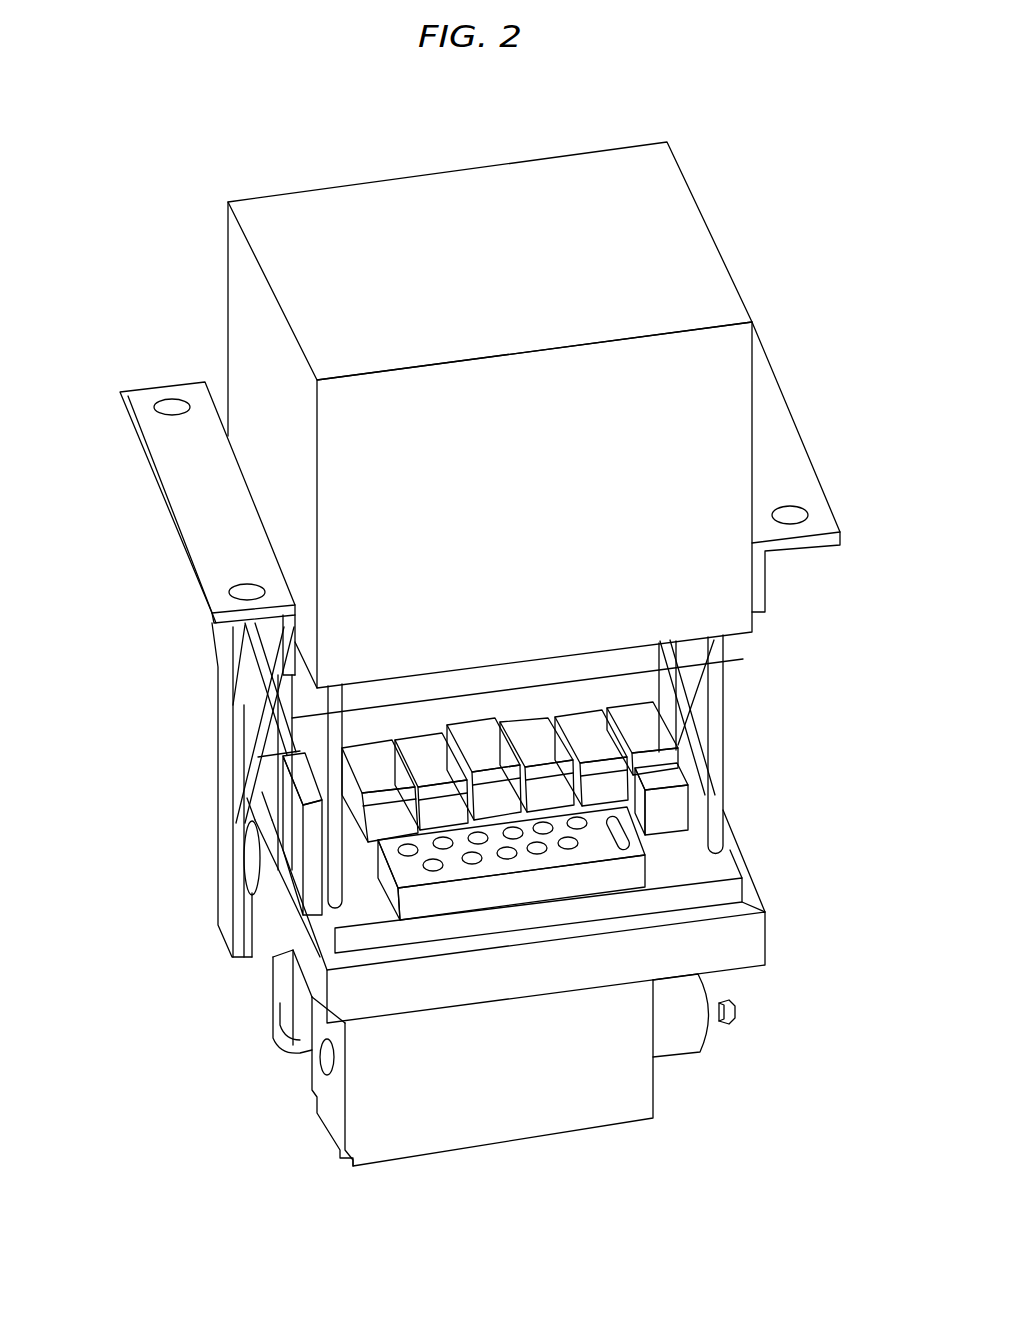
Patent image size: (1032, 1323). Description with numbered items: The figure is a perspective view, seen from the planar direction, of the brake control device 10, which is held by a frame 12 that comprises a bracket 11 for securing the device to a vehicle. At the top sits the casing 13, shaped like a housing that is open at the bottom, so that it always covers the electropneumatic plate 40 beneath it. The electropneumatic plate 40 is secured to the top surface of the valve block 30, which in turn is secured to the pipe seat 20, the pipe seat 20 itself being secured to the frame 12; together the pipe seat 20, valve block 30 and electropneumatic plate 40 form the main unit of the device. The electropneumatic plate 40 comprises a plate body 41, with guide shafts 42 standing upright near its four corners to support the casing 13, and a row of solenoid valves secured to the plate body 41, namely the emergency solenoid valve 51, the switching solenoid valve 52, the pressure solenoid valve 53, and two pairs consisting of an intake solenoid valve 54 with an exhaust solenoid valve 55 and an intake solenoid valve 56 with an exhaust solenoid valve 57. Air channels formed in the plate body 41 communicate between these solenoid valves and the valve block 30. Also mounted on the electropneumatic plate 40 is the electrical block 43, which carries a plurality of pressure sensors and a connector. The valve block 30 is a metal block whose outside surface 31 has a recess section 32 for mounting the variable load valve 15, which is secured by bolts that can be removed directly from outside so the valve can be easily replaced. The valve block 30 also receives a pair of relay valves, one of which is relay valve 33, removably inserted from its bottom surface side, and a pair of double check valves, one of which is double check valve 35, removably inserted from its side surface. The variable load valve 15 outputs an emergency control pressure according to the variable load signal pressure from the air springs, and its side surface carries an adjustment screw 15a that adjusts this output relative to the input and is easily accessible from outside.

The brake control device 10 is at (795, 222).
The bracket 11 is at (132, 392).
The frame 12 is at (188, 727).
The casing 13 is at (207, 237).
The variable load valve 15 is at (680, 1110).
The adjustment screw 15a is at (733, 1020).
The pipe seat 20 is at (632, 693).
The valve block 30 is at (790, 950).
The surface 31 is at (730, 958).
The recess section 32 is at (293, 988).
The relay valve 33 is at (278, 1030).
The double check valve 35 is at (230, 860).
The electropneumatic plate 40 is at (735, 845).
The plate body 41 is at (745, 893).
The guide shaft 42 is at (722, 757).
The electrical block 43 is at (493, 892).
The emergency solenoid valve 51 is at (478, 730).
The switching solenoid valve 52 is at (428, 745).
The pressure solenoid valve 53 is at (712, 805).
The intake solenoid valve 54 is at (382, 745).
The exhaust solenoid valve 55 is at (300, 808).
The intake solenoid valve 56 is at (548, 750).
The exhaust solenoid valve 57 is at (590, 750).